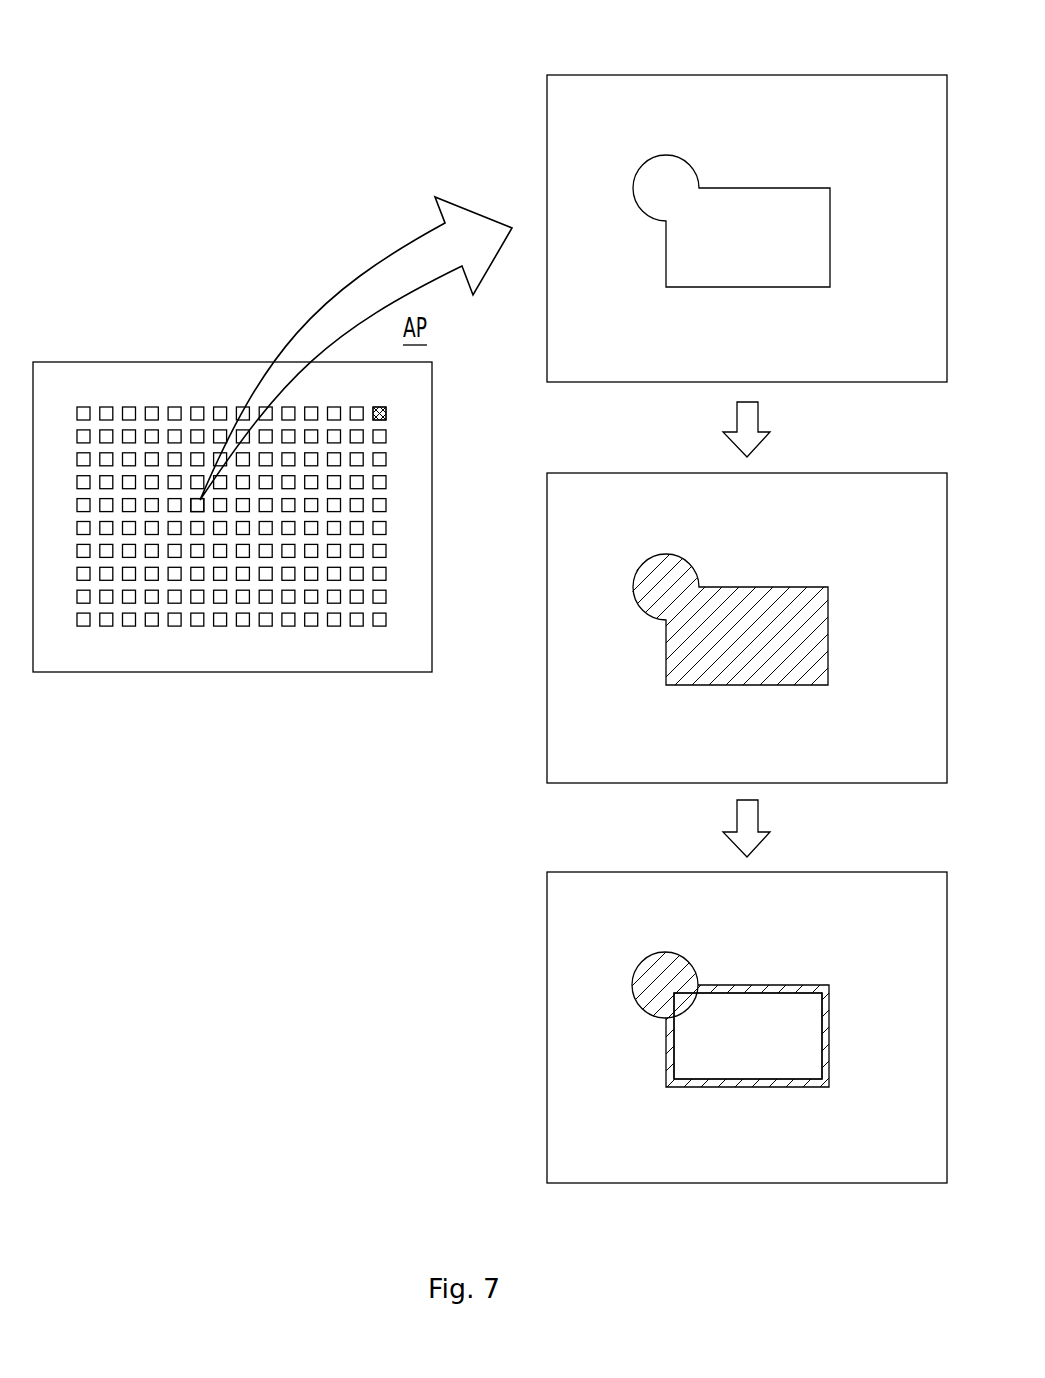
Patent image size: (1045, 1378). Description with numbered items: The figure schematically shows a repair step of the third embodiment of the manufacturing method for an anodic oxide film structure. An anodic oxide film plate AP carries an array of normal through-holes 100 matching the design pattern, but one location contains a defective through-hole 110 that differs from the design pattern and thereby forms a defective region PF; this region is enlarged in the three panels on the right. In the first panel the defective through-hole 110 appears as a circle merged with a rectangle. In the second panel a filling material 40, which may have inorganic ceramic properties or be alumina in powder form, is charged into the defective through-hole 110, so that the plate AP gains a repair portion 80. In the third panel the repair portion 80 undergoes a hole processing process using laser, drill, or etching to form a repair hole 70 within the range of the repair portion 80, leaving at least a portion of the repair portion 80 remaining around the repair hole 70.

The defective through-hole 110 is at (197, 498).
The normal through-hole 100 is at (388, 416).
The filling material 40 is at (710, 617).
The repair portion 80 is at (793, 585).
The repair hole 70 is at (726, 1040).